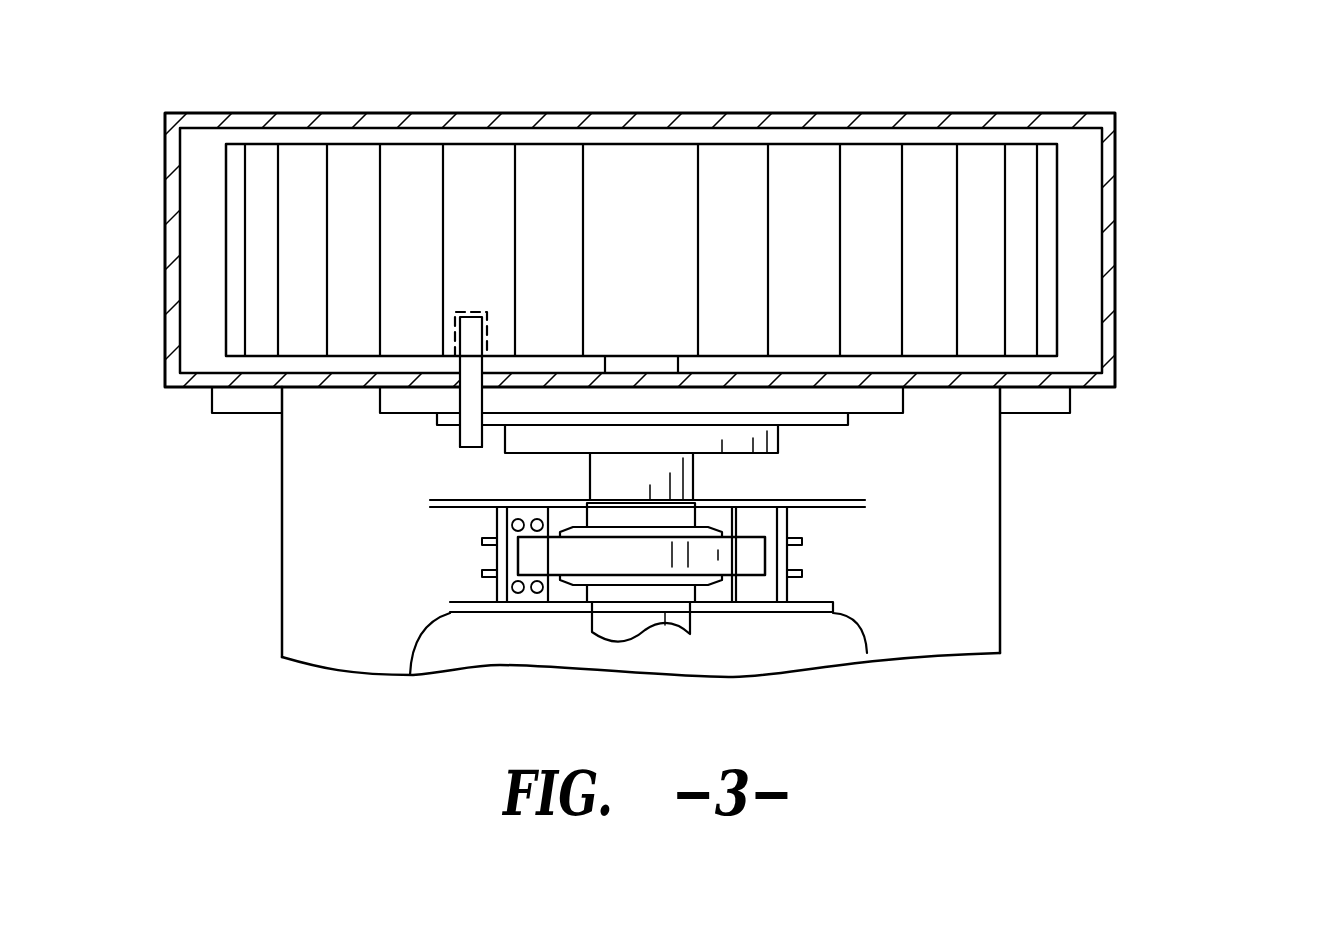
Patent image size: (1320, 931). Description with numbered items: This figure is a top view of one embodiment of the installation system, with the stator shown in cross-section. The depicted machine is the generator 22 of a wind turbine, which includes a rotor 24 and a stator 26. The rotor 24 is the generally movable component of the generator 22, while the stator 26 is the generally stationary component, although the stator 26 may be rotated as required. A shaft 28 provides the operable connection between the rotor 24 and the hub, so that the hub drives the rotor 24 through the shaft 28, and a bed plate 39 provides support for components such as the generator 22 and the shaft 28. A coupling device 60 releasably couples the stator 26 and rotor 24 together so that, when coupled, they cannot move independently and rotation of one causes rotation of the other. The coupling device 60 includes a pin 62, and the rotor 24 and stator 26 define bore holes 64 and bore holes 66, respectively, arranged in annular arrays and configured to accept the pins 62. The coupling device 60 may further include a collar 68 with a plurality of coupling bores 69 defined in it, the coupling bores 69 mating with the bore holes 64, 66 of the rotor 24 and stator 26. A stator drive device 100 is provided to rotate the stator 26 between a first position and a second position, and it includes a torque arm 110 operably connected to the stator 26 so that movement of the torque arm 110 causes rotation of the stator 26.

The generator 22 is at (1214, 207).
The rotor 24 is at (980, 160).
The stator 26 is at (1117, 150).
The shaft 28 is at (693, 480).
The bed plate 39 is at (256, 602).
The coupling device 60 is at (470, 469).
The pin 62 is at (465, 436).
The bore holes 64 is at (448, 318).
The bore holes 66 is at (445, 381).
The collar 68 is at (426, 424).
The coupling bores 69 is at (452, 434).
The stator drive device 100 is at (220, 424).
The torque arm 110 is at (245, 400).